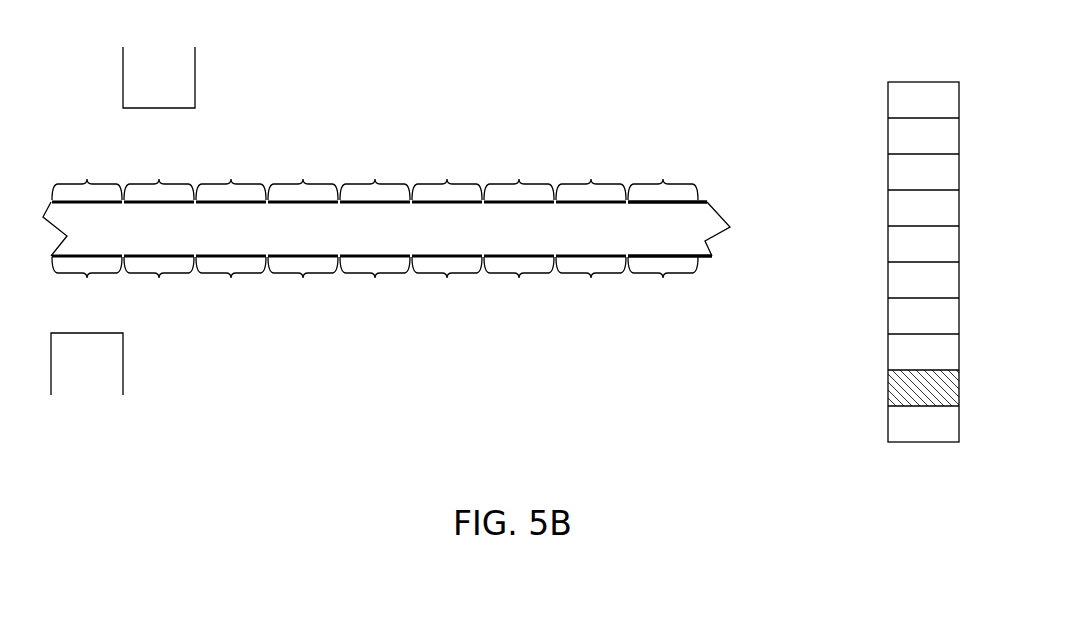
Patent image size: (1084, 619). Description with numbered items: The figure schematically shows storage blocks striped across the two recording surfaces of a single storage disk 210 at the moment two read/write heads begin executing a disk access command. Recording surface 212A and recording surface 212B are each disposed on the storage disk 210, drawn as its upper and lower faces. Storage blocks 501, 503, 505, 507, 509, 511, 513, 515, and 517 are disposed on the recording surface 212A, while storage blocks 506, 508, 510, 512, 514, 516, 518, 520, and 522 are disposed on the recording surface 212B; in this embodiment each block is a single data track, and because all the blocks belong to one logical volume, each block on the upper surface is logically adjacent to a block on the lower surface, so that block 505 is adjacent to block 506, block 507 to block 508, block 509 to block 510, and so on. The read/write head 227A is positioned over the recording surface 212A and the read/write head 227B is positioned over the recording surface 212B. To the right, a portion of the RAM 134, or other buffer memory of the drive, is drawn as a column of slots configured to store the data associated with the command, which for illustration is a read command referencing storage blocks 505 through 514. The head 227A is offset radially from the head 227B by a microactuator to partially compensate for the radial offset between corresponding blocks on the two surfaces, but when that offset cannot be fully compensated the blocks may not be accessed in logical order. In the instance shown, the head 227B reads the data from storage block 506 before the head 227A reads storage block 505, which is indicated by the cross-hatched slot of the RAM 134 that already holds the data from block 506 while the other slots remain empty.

The RAM 134 is at (897, 64).
The storage disk 210 is at (411, 241).
The recording surface 212A is at (707, 201).
The recording surface 212B is at (712, 258).
The read/write head 227A is at (189, 92).
The read/write head 227B is at (117, 371).
The storage block 501 is at (87, 179).
The storage block 503 is at (159, 179).
The storage block 505 is at (231, 179).
The storage block 507 is at (303, 179).
The storage block 509 is at (375, 179).
The storage block 511 is at (447, 179).
The storage block 513 is at (519, 179).
The storage block 515 is at (591, 179).
The storage block 517 is at (663, 179).
The storage block 506 is at (87, 278).
The storage block 508 is at (159, 278).
The storage block 510 is at (231, 278).
The storage block 512 is at (303, 278).
The storage block 514 is at (375, 278).
The storage block 516 is at (447, 278).
The storage block 518 is at (519, 278).
The storage block 520 is at (591, 278).
The storage block 522 is at (663, 278).